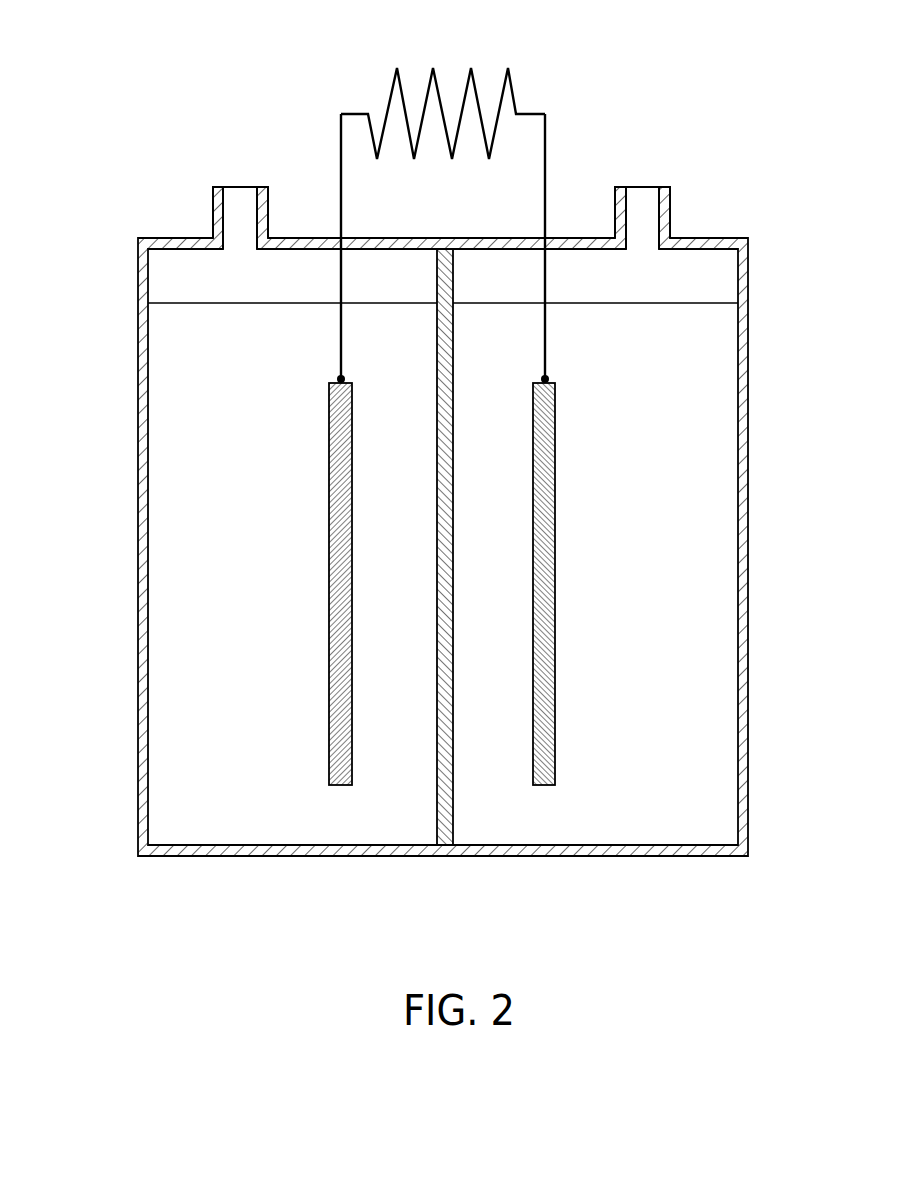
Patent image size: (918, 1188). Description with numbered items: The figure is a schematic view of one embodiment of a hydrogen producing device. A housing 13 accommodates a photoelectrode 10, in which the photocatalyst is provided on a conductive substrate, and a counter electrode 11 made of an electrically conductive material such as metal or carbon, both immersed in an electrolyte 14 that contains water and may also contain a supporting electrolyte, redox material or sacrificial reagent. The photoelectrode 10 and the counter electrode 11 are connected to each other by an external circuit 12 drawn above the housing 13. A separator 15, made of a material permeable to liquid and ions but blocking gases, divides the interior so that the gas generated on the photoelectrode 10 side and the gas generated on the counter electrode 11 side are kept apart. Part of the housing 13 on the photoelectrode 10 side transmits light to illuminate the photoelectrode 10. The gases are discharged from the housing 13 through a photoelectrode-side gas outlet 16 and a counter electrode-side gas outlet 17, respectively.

The photoelectrode 10 is at (330, 636).
The counter electrode 11 is at (556, 640).
The external circuit 12 is at (513, 90).
The housing 13 is at (138, 455).
The electrolyte 14 is at (688, 469).
The separator 15 is at (444, 788).
The photoelectrode-side gas outlet 16 is at (240, 186).
The counter electrode-side gas outlet 17 is at (645, 186).